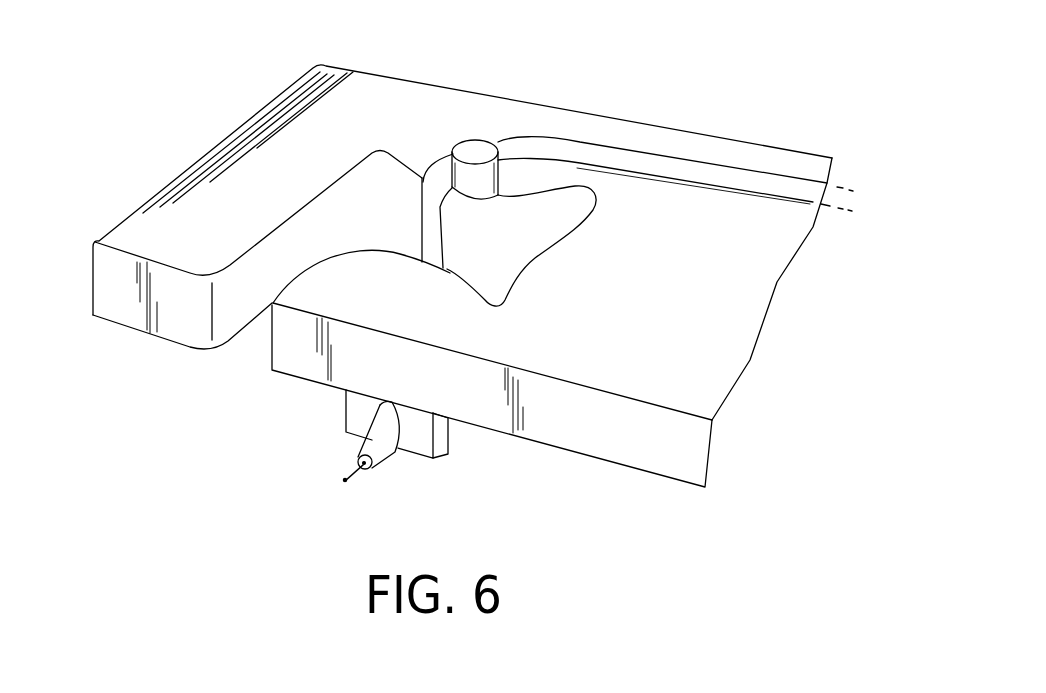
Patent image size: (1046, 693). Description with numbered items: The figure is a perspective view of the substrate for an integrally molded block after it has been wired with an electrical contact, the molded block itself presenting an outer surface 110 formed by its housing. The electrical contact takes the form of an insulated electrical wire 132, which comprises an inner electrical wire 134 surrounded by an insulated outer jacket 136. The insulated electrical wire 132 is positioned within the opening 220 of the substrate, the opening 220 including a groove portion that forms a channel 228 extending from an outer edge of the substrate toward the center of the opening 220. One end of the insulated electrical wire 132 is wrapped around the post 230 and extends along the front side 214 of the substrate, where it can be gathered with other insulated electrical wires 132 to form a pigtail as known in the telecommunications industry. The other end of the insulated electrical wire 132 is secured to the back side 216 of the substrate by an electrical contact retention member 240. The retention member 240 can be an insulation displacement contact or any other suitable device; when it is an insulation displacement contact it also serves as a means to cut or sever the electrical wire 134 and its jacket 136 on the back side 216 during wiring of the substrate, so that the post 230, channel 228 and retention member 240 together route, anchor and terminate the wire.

The outer surface 110 is at (643, 370).
The insulated electrical wire 132 is at (733, 180).
The electrical wire 134 is at (349, 481).
The insulated outer jacket 136 is at (388, 462).
The front side 214 is at (737, 314).
The back side 216 is at (537, 440).
The opening 220 is at (527, 242).
The channel 228 is at (260, 333).
The post 230 is at (475, 150).
The electrical contact retention member 240 is at (440, 443).